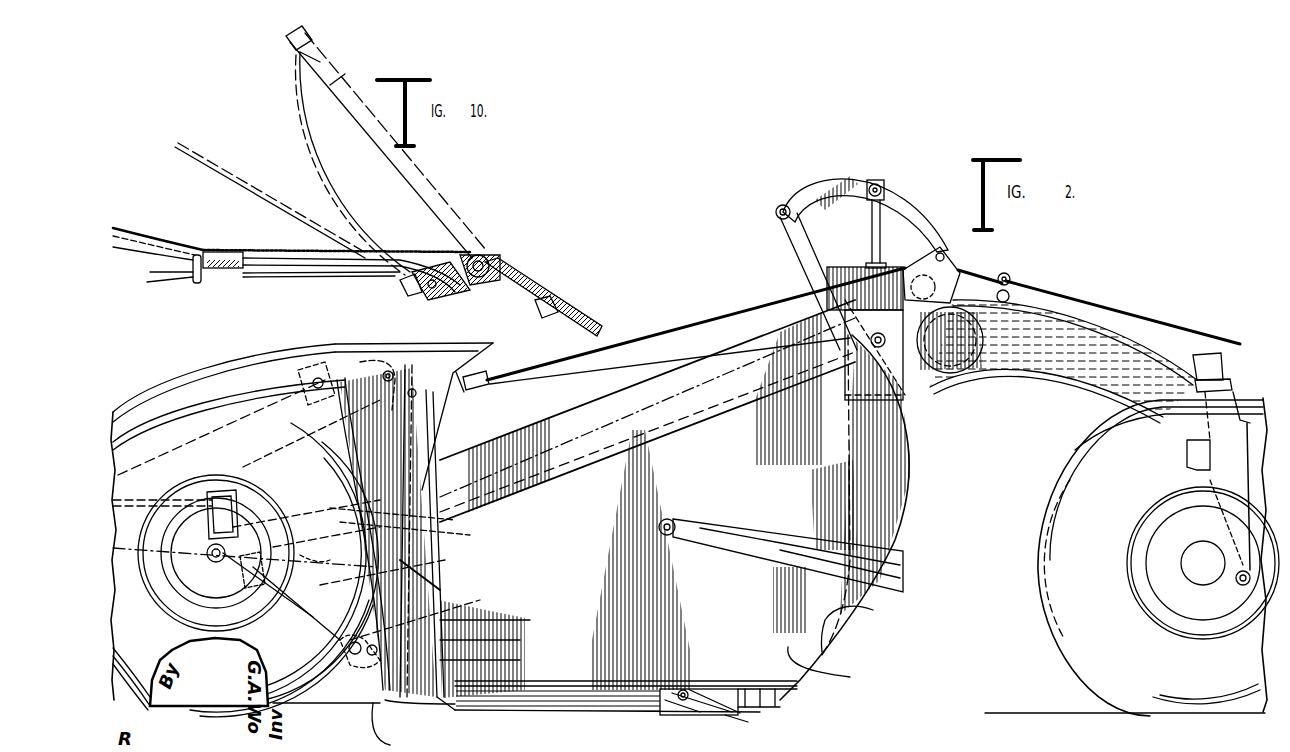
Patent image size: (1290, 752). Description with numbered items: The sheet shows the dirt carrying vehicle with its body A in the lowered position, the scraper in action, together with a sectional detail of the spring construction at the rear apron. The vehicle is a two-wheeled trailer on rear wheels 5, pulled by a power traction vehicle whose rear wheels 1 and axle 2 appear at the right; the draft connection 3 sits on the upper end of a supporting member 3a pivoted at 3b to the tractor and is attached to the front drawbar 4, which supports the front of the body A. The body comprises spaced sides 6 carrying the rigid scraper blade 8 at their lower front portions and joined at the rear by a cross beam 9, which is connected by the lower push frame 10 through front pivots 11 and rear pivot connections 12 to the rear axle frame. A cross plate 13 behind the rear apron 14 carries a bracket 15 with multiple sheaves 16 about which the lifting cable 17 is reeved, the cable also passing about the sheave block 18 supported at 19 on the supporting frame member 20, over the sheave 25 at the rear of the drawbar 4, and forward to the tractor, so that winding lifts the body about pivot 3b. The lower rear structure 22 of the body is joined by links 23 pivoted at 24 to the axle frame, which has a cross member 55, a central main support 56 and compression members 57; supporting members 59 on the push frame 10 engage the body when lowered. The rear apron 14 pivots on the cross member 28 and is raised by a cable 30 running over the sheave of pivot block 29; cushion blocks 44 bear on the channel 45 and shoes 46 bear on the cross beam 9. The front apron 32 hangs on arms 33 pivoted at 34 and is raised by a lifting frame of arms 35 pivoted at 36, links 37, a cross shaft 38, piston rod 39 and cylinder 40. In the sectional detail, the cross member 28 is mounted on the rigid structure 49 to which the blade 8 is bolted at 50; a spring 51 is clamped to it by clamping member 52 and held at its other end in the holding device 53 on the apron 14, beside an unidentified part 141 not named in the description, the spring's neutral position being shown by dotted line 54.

In FIG. 2, the rear wheels 1 is at (1053, 569).
In FIG. 2, the axle 2 is at (1203, 572).
In FIG. 2, the universal joint or draft connection 3 is at (1232, 386).
In FIG. 2, the supporting member 3a is at (1228, 481).
In FIG. 2, the pivot 3b is at (1230, 545).
In FIG. 2, the front drawbar or beam 4 is at (1083, 365).
In FIG. 2, the rear wheels 5 is at (233, 437).
In FIG. 2, the sides 6 is at (615, 700).
In FIG. 10, the scraper or blade 8 is at (539, 283).
In FIG. 2, the scraper or blade 8 is at (713, 687).
In FIG. 2, the cross beam 9 is at (472, 650).
In FIG. 2, the push frame link structure 10 is at (316, 609).
In FIG. 2, the pivots 11 is at (385, 700).
In FIG. 2, the pivot connections 12 is at (213, 568).
In FIG. 2, the cross plate 13 is at (432, 572).
In FIG. 10, the rear apron 14 is at (412, 164).
In FIG. 2, the rear apron 14 is at (447, 615).
In FIG. 2, the bracket 15 is at (378, 706).
In FIG. 2, the sheaves 16 is at (346, 690).
In FIG. 2, the lifting cable means 17 is at (622, 412).
In FIG. 2, the multiple sheave block 18 is at (398, 372).
In FIG. 2, the support 19 is at (379, 350).
In FIG. 2, the supporting frame member 20 is at (276, 472).
In FIG. 2, the rigid structure 22 is at (345, 520).
In FIG. 2, the links 23 is at (290, 500).
In FIG. 2, the pivot 24 is at (316, 352).
In FIG. 2, the sheave 25 is at (1004, 274).
In FIG. 10, the cross member 28 is at (485, 262).
In FIG. 2, the pivot block 29 is at (474, 390).
In FIG. 2, the cable 30 is at (692, 330).
In FIG. 2, the front apron 32 is at (912, 520).
In FIG. 2, the arms 33 is at (760, 543).
In FIG. 2, the pivots 34 is at (667, 537).
In FIG. 2, the arms 35 is at (910, 207).
In FIG. 2, the pivot 36 is at (950, 255).
In FIG. 2, the links 37 is at (790, 232).
In FIG. 2, the cross shaft 38 is at (882, 186).
In FIG. 2, the piston rod 39 is at (870, 222).
In FIG. 2, the cylinder 40 is at (908, 396).
In FIG. 2, the cushion blocks 44 is at (422, 535).
In FIG. 2, the cross member or channel 45 is at (445, 548).
In FIG. 2, the shoes 46 is at (482, 666).
In FIG. 10, the rigid supporting structure 49 is at (481, 300).
In FIG. 2, the rigid supporting structure 49 is at (702, 716).
In FIG. 10, the bolts 50 is at (532, 312).
In FIG. 10, the spring 51 is at (302, 180).
In FIG. 10, the clamping member 52 is at (405, 288).
In FIG. 10, the holding device 53 is at (150, 275).
In FIG. 10, the dotted line 54 is at (208, 168).
In FIG. 2, the cross member 55 is at (208, 520).
In FIG. 2, the central main support 56 is at (188, 456).
In FIG. 2, the compression members 57 is at (124, 540).
In FIG. 2, the rigid supporting members 59 is at (306, 560).
In FIG. 10, the box 141 is at (212, 248).
In FIG. 2, the body A is at (868, 610).